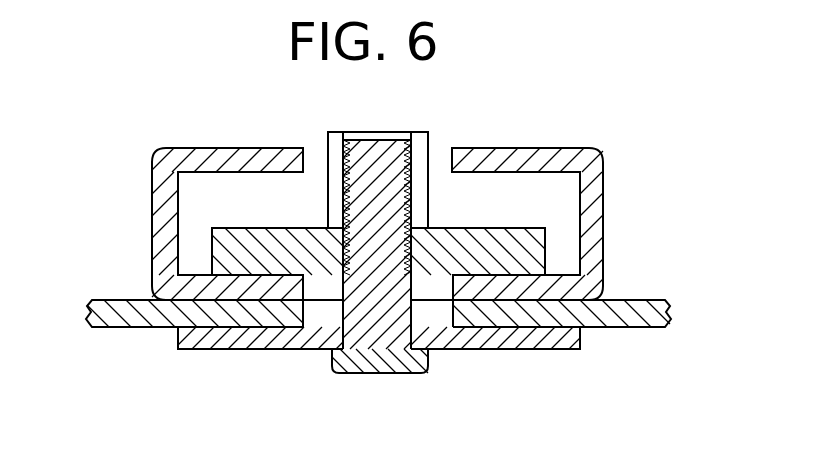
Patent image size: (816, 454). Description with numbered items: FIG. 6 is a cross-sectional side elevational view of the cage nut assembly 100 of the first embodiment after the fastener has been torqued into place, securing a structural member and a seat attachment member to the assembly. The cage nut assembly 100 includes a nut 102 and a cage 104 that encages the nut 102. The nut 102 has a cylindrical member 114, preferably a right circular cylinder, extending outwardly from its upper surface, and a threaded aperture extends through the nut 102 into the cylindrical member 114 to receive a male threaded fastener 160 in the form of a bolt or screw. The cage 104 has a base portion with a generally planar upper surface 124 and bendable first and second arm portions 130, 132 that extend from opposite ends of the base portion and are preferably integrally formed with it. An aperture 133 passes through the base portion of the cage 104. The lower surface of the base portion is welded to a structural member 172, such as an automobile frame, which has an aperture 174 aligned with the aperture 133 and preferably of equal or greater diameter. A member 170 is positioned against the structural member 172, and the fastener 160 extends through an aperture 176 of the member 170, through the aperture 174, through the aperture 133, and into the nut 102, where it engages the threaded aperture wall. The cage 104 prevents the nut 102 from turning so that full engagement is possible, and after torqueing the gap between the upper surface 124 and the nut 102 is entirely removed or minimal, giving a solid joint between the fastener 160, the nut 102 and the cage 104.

The cage nut assembly 100 is at (628, 168).
The nut 102 is at (417, 154).
The cage 104 is at (603, 212).
The cylindrical member 114 is at (328, 162).
The upper surface 124 is at (192, 277).
The first arm portion 130 is at (588, 163).
The second arm portion 132 is at (166, 164).
The aperture 133 is at (452, 350).
The male threaded fastener 160 is at (378, 368).
The member 170 is at (232, 340).
The structural member 172 is at (133, 313).
The aperture 174 is at (462, 322).
The aperture 176 is at (453, 288).